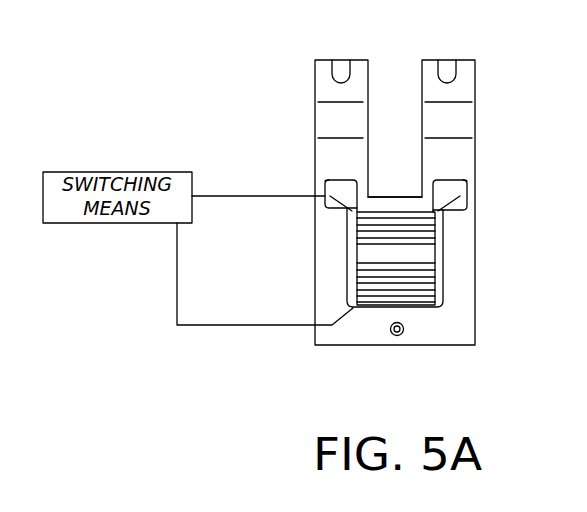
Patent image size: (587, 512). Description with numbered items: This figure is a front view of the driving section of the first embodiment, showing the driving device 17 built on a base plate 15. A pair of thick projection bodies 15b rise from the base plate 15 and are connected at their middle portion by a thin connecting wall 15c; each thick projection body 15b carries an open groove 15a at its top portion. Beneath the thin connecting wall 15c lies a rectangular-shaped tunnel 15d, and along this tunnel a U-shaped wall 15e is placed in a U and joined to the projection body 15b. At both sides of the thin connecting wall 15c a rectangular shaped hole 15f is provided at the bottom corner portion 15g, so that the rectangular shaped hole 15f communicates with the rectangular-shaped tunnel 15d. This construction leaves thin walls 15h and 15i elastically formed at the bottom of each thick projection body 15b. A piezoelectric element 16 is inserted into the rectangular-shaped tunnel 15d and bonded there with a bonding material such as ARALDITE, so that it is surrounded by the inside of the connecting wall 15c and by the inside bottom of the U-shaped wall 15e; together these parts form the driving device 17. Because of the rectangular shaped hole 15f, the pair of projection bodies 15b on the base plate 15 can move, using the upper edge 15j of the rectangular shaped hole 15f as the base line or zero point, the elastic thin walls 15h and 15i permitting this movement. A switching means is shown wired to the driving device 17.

The base plate 15 is at (321, 304).
The open groove 15a is at (341, 70).
The thick projection body 15b is at (325, 117).
The thin connecting wall 15c is at (398, 205).
The rectangular-shaped tunnel 15d is at (348, 247).
The U-shaped wall 15e is at (385, 340).
The rectangular shaped hole 15f is at (325, 209).
The bottom corner portion 15g is at (352, 213).
The thin wall 15h is at (323, 187).
The thin wall 15i is at (367, 192).
The upper edge 15j is at (325, 178).
The piezoelectric element 16 is at (379, 294).
The driving device 17 is at (435, 325).